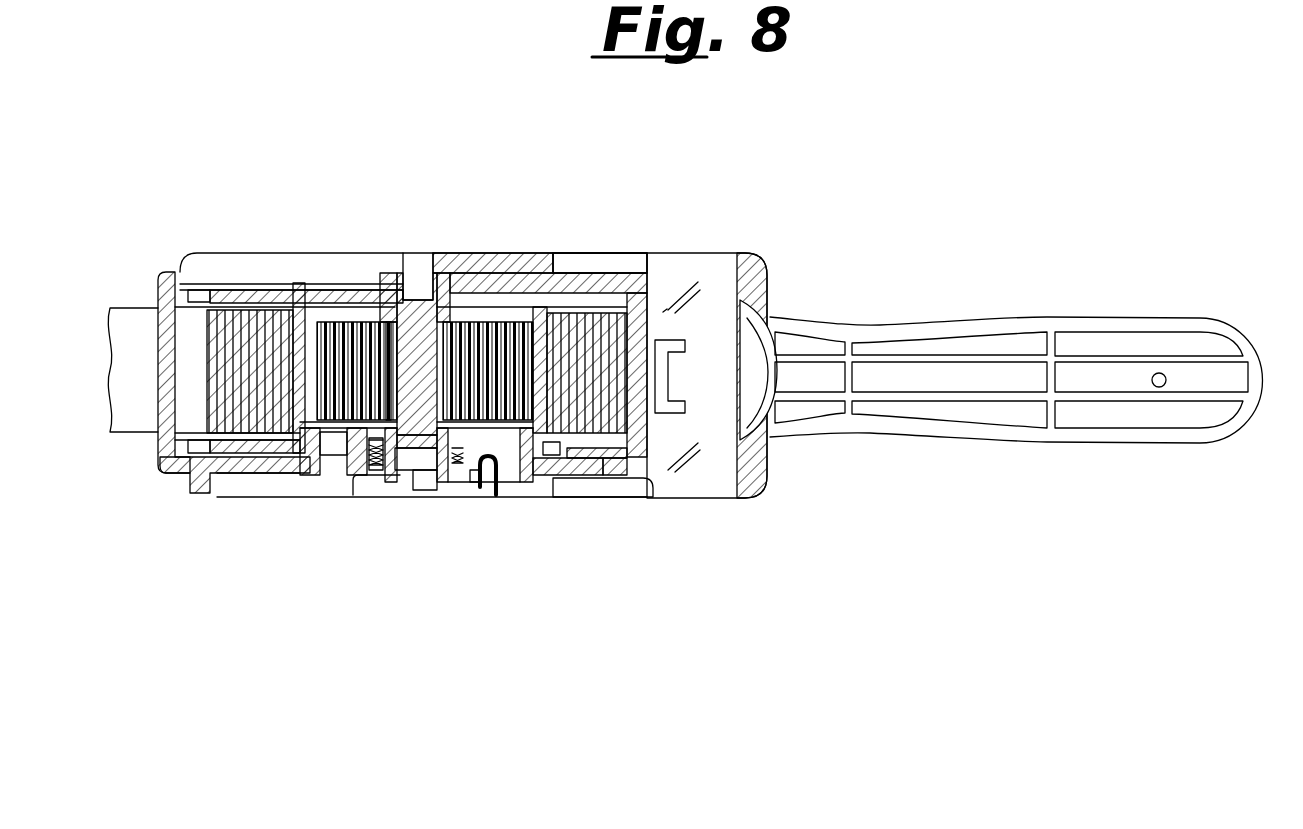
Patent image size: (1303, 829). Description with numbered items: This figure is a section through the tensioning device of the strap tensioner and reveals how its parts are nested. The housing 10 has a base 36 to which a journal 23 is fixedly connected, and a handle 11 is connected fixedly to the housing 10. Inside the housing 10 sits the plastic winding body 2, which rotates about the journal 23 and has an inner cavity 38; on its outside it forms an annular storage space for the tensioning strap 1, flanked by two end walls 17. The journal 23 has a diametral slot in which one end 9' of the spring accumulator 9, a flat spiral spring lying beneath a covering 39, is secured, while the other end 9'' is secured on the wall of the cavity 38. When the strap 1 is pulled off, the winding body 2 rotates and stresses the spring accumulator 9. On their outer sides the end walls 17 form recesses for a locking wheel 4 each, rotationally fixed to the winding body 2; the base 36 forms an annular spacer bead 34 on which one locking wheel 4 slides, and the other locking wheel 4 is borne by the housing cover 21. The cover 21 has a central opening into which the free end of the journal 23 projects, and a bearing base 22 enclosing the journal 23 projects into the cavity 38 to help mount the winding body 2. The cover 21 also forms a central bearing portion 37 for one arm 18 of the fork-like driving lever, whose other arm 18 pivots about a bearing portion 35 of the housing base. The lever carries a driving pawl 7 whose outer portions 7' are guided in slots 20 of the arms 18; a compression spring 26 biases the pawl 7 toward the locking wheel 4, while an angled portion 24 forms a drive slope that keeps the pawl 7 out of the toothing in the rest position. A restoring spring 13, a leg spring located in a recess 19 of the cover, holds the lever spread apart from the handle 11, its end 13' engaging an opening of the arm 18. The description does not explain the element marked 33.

The tensioning strap 1 is at (127, 330).
The winding body 2 is at (333, 282).
The locking wheel 4 is at (195, 286).
The driving pawl 7 is at (696, 475).
The outer portions of the driving pawl 7' is at (720, 239).
The spring accumulator 9 is at (357, 292).
The end of the spring accumulator 9' is at (411, 292).
The other end of the spring accumulator 9'' is at (311, 306).
The housing 10 is at (166, 256).
The handle 11 is at (1080, 323).
The restoring spring 13 is at (355, 535).
The end of the restoring spring 13' is at (499, 521).
The end walls 17 is at (226, 300).
The arms 18 is at (478, 265).
The recess 19 is at (332, 448).
The slots 20 is at (578, 265).
The housing cover 21 is at (173, 464).
The bearing base 22 is at (310, 450).
The journal 23 is at (425, 440).
The angled portion 24 is at (667, 384).
The compression spring 26 is at (747, 363).
The latch bracket 33 is at (676, 342).
The annular spacer bead 34 is at (600, 295).
The bearing portion 35 is at (395, 262).
The base 36 is at (270, 275).
The central bearing portion 37 is at (387, 487).
The inner cavity 38 is at (483, 337).
The covering 39 is at (525, 470).